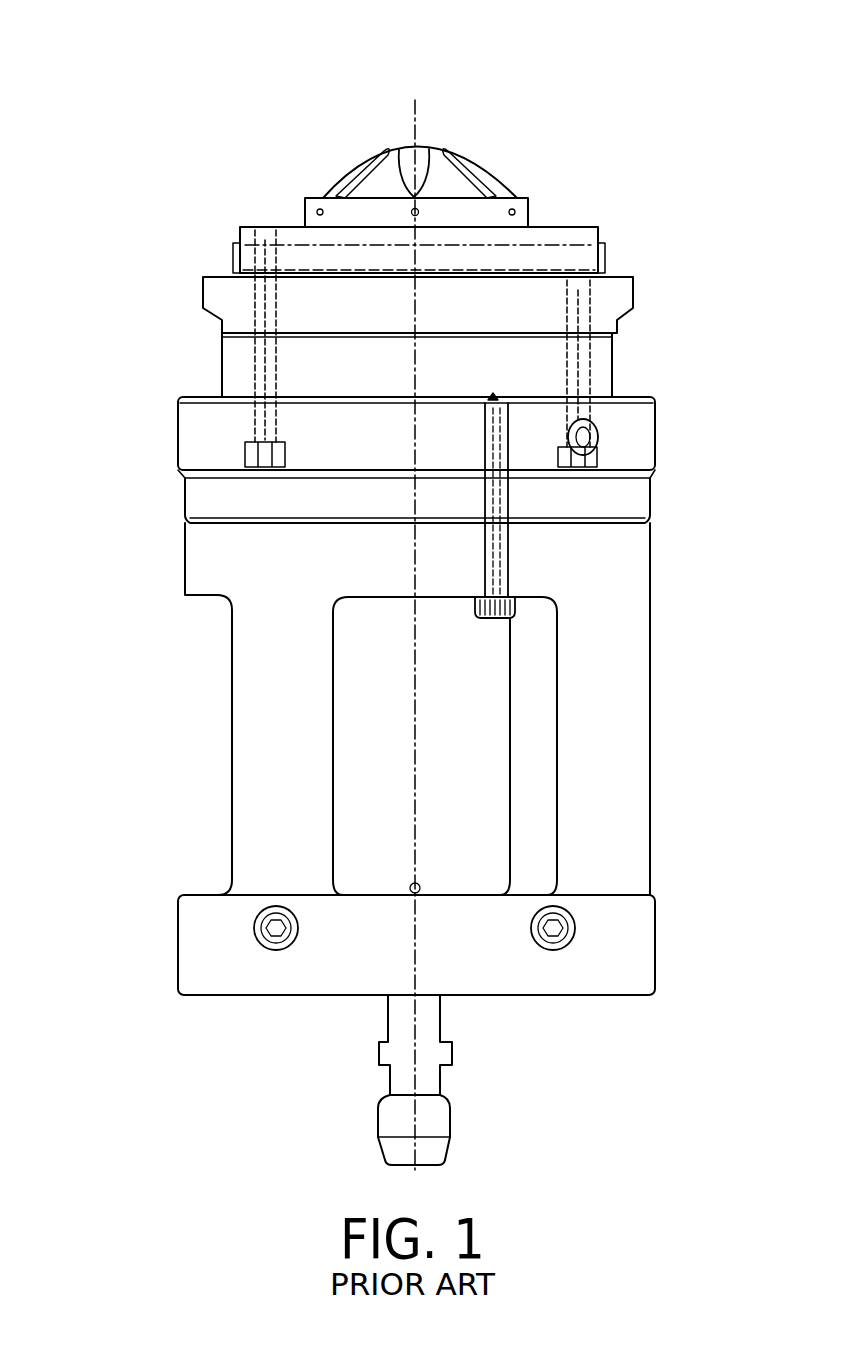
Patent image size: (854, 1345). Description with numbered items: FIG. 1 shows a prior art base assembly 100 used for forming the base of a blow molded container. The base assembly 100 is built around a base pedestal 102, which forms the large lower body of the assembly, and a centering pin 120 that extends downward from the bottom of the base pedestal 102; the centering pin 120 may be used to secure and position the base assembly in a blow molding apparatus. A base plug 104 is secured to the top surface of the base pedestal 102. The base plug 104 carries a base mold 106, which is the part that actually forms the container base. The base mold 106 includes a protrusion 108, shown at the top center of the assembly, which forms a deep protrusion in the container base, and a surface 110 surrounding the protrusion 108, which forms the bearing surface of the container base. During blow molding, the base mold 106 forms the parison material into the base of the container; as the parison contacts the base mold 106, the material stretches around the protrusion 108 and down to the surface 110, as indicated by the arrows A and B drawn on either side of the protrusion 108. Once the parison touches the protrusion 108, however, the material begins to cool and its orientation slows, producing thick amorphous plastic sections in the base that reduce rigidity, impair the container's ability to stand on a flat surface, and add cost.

The base assembly 100 is at (135, 70).
The base pedestal 102 is at (185, 556).
The base plug 104 is at (228, 263).
The base mold 106 is at (305, 213).
The protrusion 108 is at (437, 148).
The surface 110 is at (517, 198).
The centering pin 120 is at (452, 1128).
The arrow A is at (322, 168).
The arrow B is at (513, 172).